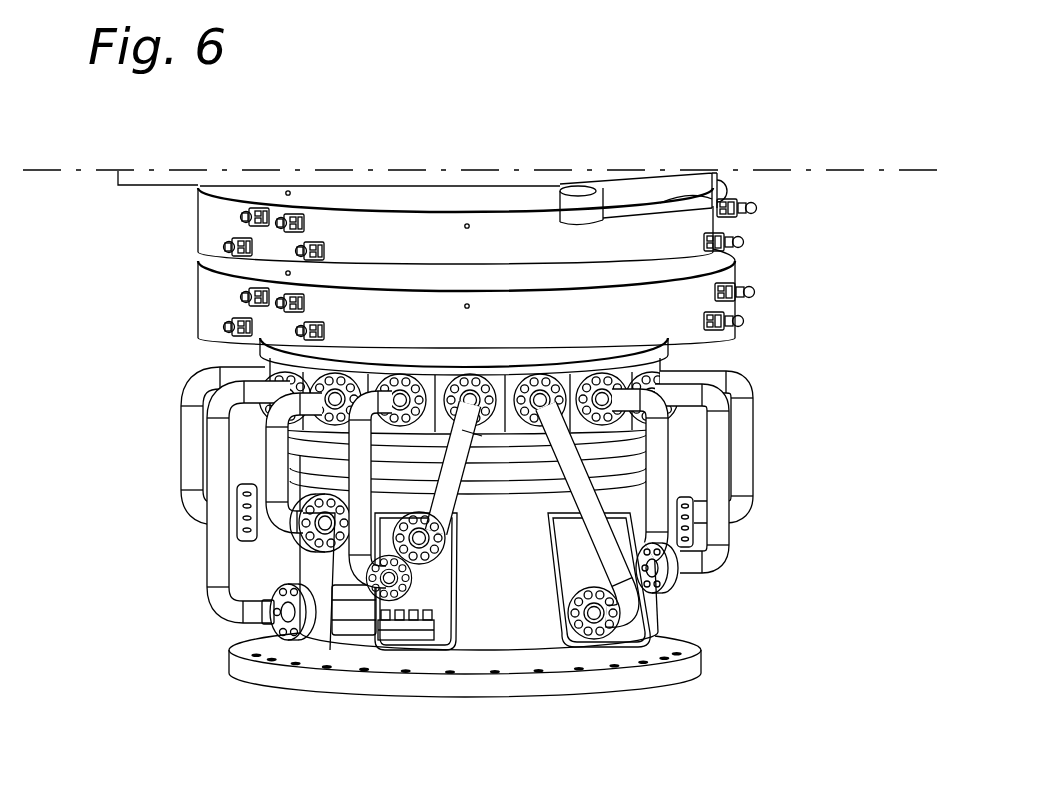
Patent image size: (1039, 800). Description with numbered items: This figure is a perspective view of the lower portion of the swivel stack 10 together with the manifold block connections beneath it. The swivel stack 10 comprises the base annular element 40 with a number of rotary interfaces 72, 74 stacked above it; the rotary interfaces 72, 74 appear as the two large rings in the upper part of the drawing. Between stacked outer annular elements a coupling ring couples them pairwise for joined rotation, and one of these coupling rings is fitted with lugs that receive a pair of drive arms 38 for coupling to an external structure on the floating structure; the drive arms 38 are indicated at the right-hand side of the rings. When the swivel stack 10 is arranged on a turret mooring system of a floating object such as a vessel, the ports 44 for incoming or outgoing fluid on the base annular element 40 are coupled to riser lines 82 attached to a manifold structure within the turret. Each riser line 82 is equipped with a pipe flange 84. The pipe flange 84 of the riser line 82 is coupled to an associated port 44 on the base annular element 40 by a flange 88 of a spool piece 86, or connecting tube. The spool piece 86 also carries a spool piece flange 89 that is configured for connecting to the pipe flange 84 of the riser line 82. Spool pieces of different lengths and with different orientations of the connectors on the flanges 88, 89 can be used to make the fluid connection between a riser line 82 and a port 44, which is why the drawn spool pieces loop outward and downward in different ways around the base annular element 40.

The swivel stack 10 is at (587, 157).
The drive arms 38 is at (755, 215).
The rotary interface 74 is at (560, 251).
The rotary interface 72 is at (560, 328).
The flange of spool piece 88 is at (396, 430).
The port 44 is at (500, 422).
The base annular element 40 is at (493, 428).
The spool piece 86 is at (237, 600).
The spool piece flange 89 is at (277, 640).
The pipe flange 84 is at (310, 633).
The riser line 82 is at (347, 633).